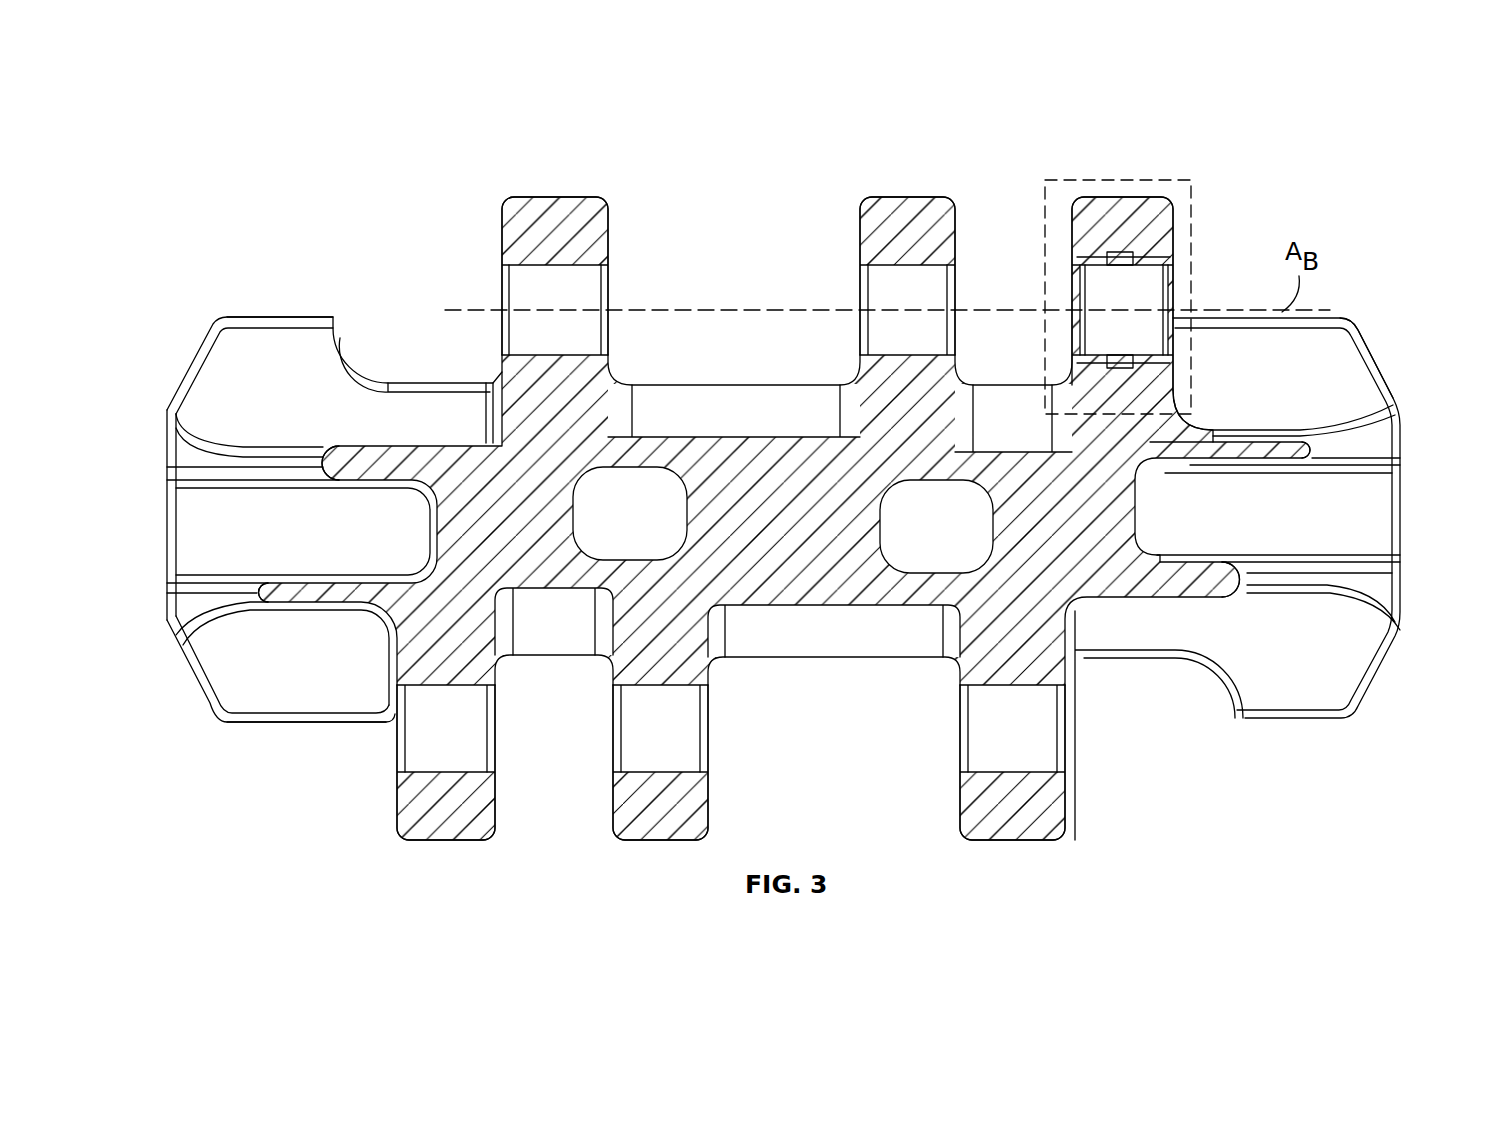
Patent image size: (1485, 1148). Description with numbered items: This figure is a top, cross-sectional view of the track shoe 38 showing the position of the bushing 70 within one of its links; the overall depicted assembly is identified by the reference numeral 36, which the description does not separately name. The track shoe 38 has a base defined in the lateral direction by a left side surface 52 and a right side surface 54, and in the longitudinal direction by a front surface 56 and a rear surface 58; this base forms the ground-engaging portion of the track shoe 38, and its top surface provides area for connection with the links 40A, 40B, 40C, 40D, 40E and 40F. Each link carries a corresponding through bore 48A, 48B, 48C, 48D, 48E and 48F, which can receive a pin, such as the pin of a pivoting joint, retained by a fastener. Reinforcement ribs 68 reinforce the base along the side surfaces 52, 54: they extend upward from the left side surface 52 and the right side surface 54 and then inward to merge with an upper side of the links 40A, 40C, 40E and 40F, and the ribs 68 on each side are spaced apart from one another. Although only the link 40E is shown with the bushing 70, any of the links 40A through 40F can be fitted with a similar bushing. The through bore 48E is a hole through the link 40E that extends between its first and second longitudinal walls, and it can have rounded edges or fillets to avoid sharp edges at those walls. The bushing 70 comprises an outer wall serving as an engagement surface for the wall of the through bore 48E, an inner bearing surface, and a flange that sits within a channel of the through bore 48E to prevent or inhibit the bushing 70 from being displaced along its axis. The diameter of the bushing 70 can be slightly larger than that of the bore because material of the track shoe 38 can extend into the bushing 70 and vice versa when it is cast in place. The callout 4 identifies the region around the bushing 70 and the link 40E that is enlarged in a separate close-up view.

The crankshaft 36 is at (1353, 140).
The track shoe 38 is at (1380, 352).
The callout 4 is at (1088, 178).
The link 40A is at (405, 797).
The link 40B is at (620, 797).
The link 40C is at (510, 240).
The link 40D is at (870, 230).
The link 40E is at (1128, 208).
The link 40F is at (968, 797).
The through bore 48A is at (423, 735).
The through bore 48B is at (638, 735).
The through bore 48C is at (527, 297).
The through bore 48D is at (888, 297).
The through bore 48E is at (1086, 262).
The through bore 48F is at (982, 735).
The left side surface 52 is at (165, 522).
The right side surface 54 is at (1400, 527).
The front surface 56 is at (280, 318).
The rear surface 58 is at (280, 722).
The reinforcement ribs 68 is at (345, 448).
The bushing 70 is at (1148, 296).